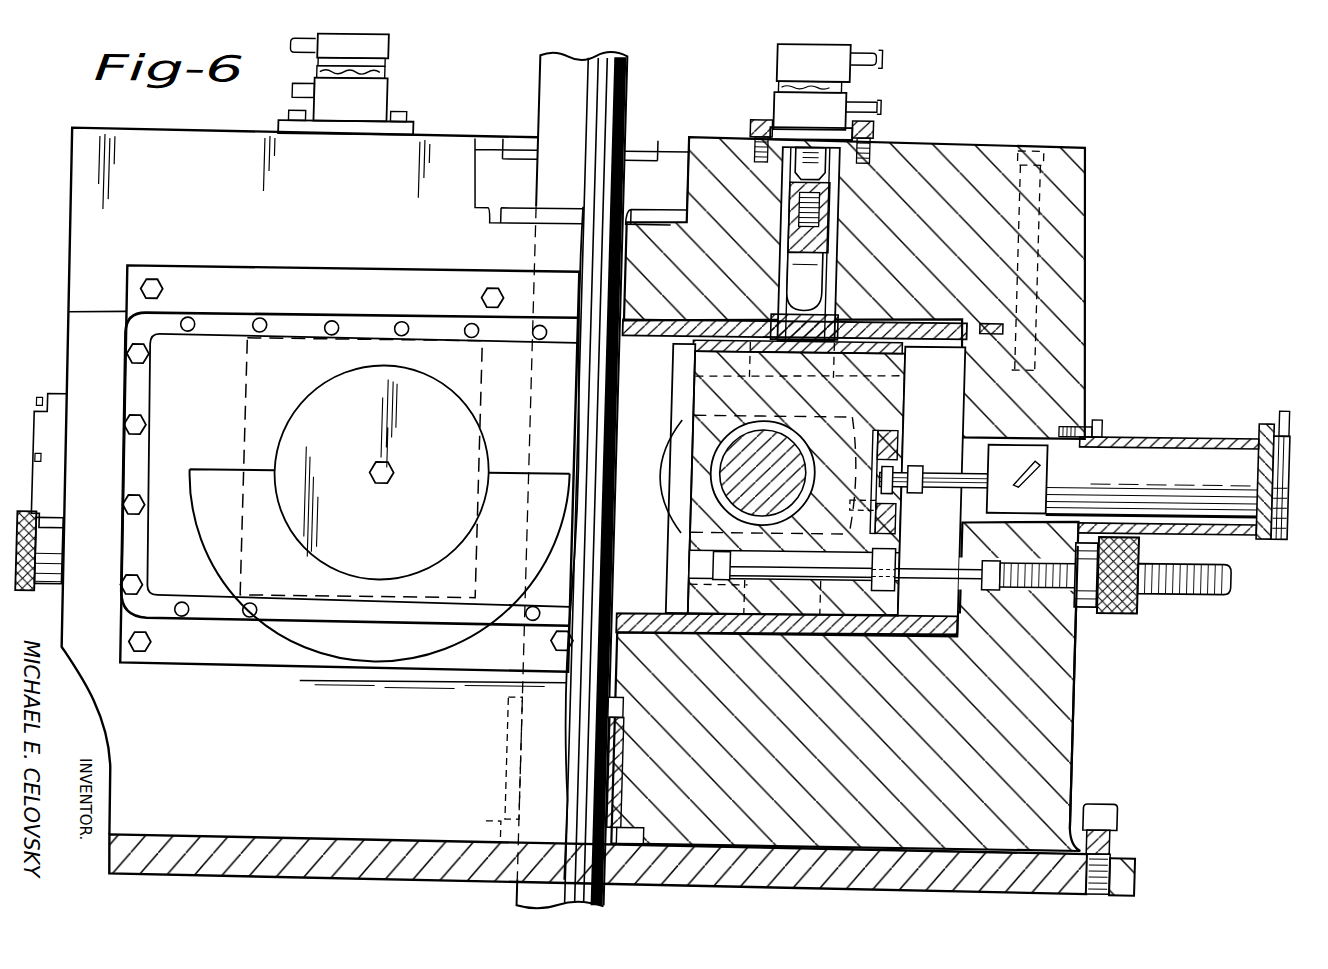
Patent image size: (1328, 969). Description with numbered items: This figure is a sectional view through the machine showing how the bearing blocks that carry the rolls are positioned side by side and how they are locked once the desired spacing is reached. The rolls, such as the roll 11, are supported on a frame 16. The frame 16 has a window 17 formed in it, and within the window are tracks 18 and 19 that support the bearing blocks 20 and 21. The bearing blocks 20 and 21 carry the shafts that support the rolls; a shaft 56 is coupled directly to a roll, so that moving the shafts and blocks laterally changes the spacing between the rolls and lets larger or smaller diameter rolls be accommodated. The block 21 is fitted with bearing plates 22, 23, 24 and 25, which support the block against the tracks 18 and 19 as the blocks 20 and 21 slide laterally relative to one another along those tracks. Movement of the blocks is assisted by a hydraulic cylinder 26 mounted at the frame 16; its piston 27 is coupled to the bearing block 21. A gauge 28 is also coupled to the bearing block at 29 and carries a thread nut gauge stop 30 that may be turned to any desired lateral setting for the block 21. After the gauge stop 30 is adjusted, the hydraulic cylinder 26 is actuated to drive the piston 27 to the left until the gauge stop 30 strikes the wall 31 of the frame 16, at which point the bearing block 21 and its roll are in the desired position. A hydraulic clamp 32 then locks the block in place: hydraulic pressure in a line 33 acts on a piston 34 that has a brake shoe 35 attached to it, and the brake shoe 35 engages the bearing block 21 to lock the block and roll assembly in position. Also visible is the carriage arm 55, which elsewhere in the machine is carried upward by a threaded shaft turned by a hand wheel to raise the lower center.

The roll 11 is at (222, 563).
The frame 16 is at (196, 220).
The window 17 is at (155, 392).
The track 18 is at (206, 338).
The track 19 is at (216, 608).
The bearing block 20 is at (290, 368).
The bearing block 21 is at (772, 380).
The bearing plate 22 is at (852, 609).
The bearing plate 23 is at (713, 615).
The bearing plate 24 is at (895, 367).
The bearing plate 25 is at (701, 360).
The hydraulic cylinder 26 is at (1147, 432).
The piston 27 is at (913, 467).
The gauge 28 is at (984, 586).
The coupling of gauge to bearing block 29 is at (813, 561).
The thread nut gauge stop 30 is at (1133, 609).
The wall 31 is at (1090, 696).
The hydraulic clamp 32 is at (831, 239).
The line 33 is at (836, 171).
The piston 34 is at (841, 308).
The brake shoe 35 is at (796, 330).
The carriage arm 55 is at (389, 488).
The shaft 56 is at (803, 471).